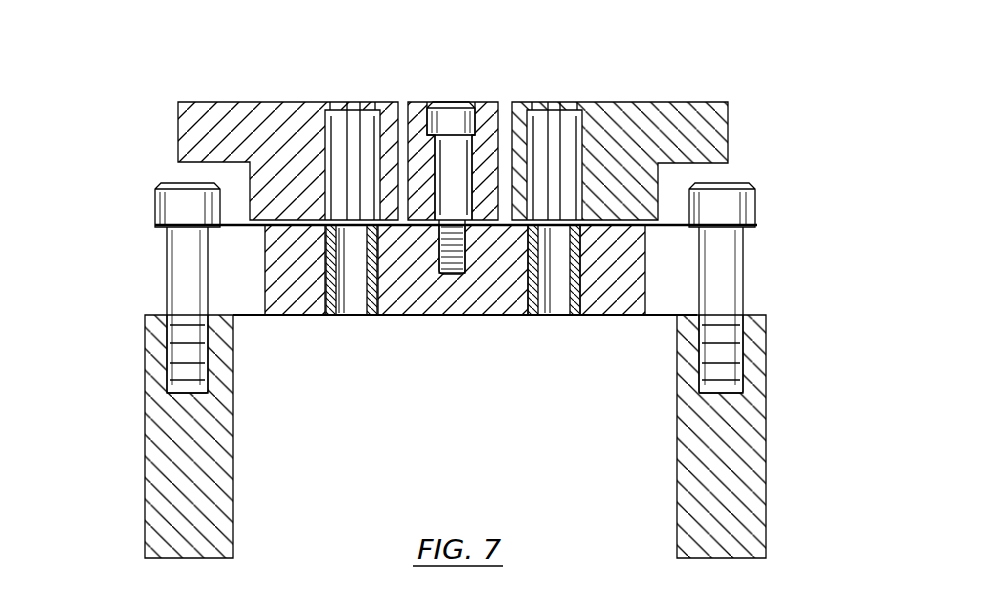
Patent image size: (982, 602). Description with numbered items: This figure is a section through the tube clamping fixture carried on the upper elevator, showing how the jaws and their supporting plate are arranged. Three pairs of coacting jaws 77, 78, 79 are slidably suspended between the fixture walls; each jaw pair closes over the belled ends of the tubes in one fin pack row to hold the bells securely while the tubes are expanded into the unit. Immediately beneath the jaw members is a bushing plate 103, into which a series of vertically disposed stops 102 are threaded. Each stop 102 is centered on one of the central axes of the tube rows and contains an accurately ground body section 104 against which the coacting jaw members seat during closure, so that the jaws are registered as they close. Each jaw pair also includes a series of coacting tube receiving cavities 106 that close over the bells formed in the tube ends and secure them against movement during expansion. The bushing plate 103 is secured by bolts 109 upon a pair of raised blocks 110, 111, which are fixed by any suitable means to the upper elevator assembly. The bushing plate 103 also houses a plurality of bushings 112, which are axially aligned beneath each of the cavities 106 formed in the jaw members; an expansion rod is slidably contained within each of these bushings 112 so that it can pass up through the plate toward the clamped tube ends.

The coacting jaw pair 77 is at (166, 120).
The coacting jaw pair 79 is at (752, 124).
The coacting jaw pair 78 is at (454, 84).
The stop 102 is at (482, 152).
The body section 104 is at (423, 133).
The tube receiving cavity 106 is at (372, 122).
The bushing plate 103 is at (467, 317).
The bushing 112 is at (337, 297).
The bolt 109 is at (157, 213).
The raised block 110 is at (233, 530).
The raised block 111 is at (677, 514).